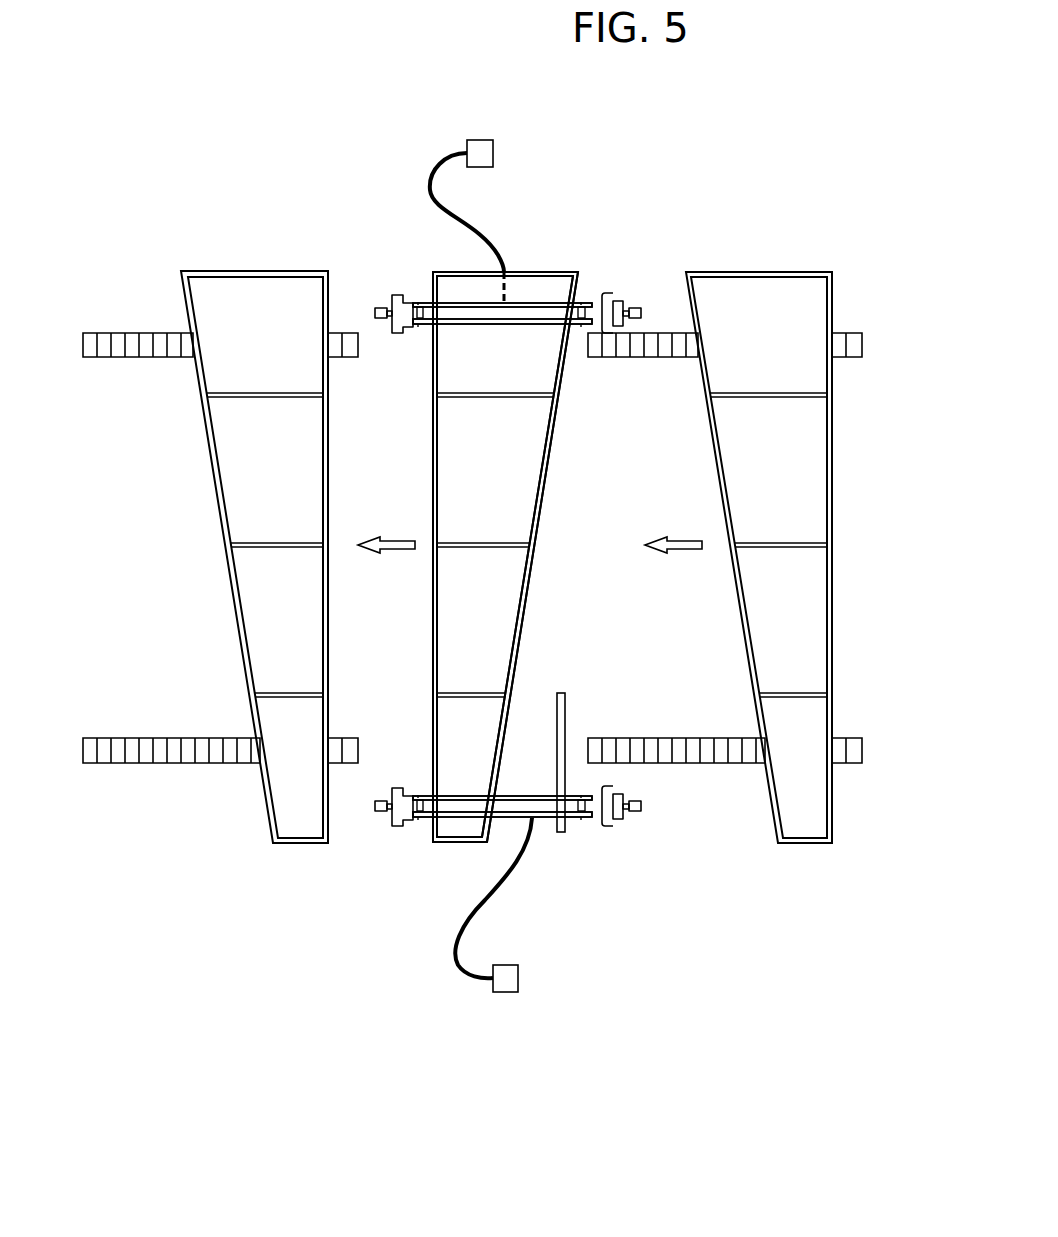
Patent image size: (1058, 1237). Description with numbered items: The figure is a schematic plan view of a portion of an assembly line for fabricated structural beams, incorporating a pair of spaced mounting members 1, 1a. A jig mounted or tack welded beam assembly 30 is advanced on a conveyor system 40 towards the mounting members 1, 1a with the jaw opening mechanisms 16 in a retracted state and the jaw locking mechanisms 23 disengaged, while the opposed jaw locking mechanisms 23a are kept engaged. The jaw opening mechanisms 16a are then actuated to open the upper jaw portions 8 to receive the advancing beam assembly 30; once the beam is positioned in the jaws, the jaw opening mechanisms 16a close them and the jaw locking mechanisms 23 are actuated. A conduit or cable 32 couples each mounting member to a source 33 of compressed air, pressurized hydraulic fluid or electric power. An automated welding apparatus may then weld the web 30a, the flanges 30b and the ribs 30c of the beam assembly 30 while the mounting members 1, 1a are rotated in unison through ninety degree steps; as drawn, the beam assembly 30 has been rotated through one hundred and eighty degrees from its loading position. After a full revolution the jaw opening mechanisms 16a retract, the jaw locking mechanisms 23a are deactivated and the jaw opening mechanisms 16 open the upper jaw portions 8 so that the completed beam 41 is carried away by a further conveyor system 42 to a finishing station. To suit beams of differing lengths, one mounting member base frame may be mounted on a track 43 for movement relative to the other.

The mounting member 1 is at (432, 300).
The mounting member 1a is at (540, 818).
The upper jaw portion 8 is at (535, 303).
The jaw opening mechanism 16 is at (640, 306).
The jaw opening mechanism 16a is at (378, 307).
The jaw locking mechanism 23 is at (584, 302).
The jaw locking mechanism 23a is at (413, 296).
The beam assembly 30 is at (800, 478).
The web 30a is at (514, 452).
The panel side plate 30b is at (547, 490).
The ribs 30c is at (487, 540).
The conduit or cable 32 is at (458, 152).
The source 33 is at (480, 153).
The conveyor system 40 is at (850, 345).
The completed beam 41 is at (228, 574).
The further conveyor system 42 is at (130, 345).
The track 43 is at (565, 700).